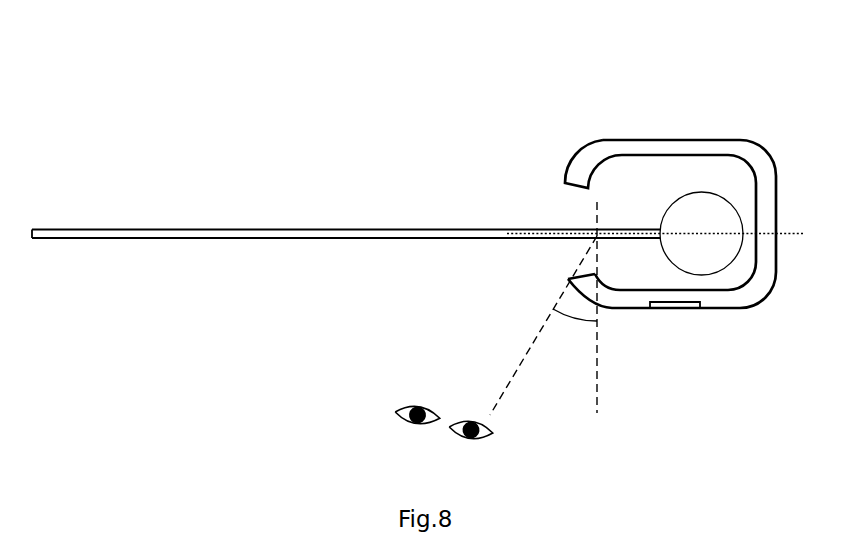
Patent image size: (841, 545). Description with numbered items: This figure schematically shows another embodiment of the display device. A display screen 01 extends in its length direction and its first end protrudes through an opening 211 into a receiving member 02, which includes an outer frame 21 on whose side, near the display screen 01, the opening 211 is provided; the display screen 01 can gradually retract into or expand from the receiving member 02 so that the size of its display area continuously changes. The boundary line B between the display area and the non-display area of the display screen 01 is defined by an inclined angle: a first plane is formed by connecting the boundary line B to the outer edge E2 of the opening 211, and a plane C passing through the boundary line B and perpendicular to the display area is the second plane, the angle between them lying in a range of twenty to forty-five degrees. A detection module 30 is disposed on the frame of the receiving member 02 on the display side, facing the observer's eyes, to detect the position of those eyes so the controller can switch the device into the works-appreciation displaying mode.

The display screen 01 is at (228, 235).
The receiving member 02 is at (621, 168).
The outer frame 21 is at (668, 148).
The opening 211 is at (548, 198).
The detection module 30 is at (672, 308).
The boundary line B is at (609, 297).
The plane C is at (661, 217).
The outer edge of the opening E2 is at (595, 274).